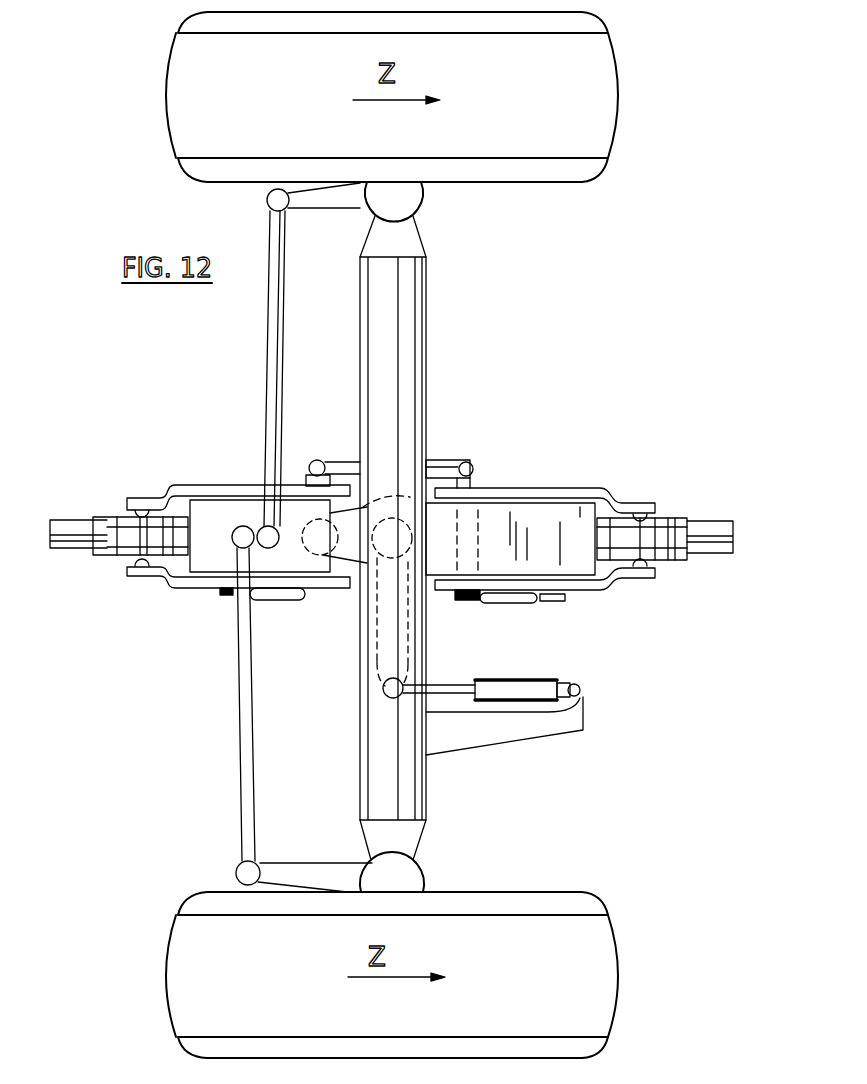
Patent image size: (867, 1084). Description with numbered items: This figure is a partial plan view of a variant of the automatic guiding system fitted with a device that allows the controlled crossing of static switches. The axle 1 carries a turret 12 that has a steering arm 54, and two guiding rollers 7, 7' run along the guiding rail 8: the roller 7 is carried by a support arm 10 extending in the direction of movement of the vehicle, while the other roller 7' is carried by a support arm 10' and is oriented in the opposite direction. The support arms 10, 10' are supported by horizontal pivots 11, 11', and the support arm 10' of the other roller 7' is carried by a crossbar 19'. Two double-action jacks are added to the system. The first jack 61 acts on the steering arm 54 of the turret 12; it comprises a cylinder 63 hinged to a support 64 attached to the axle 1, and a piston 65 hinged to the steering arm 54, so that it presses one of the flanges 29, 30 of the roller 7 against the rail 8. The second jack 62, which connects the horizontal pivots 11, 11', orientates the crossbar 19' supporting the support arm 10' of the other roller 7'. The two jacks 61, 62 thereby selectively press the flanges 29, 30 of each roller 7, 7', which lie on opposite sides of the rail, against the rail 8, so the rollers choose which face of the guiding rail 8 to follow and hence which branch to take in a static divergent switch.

The axle 1 is at (412, 784).
The roller 7 is at (665, 479).
The other roller 7' is at (140, 476).
The rail 8 is at (72, 525).
The support arm 10 is at (510, 501).
The support arm 10' is at (265, 499).
The horizontal pivot 11 is at (545, 494).
The horizontal pivot 11' is at (239, 493).
The turret 12 is at (387, 521).
The crossbar 19' is at (289, 537).
The flange 29 is at (97, 515).
The flange 30 is at (118, 557).
The steering arm 54 is at (383, 627).
The first double-action jack 61 is at (505, 684).
The second double-action jack 62 is at (442, 460).
The cylinder 63 is at (552, 680).
The support 64 is at (560, 720).
The piston 65 is at (455, 686).